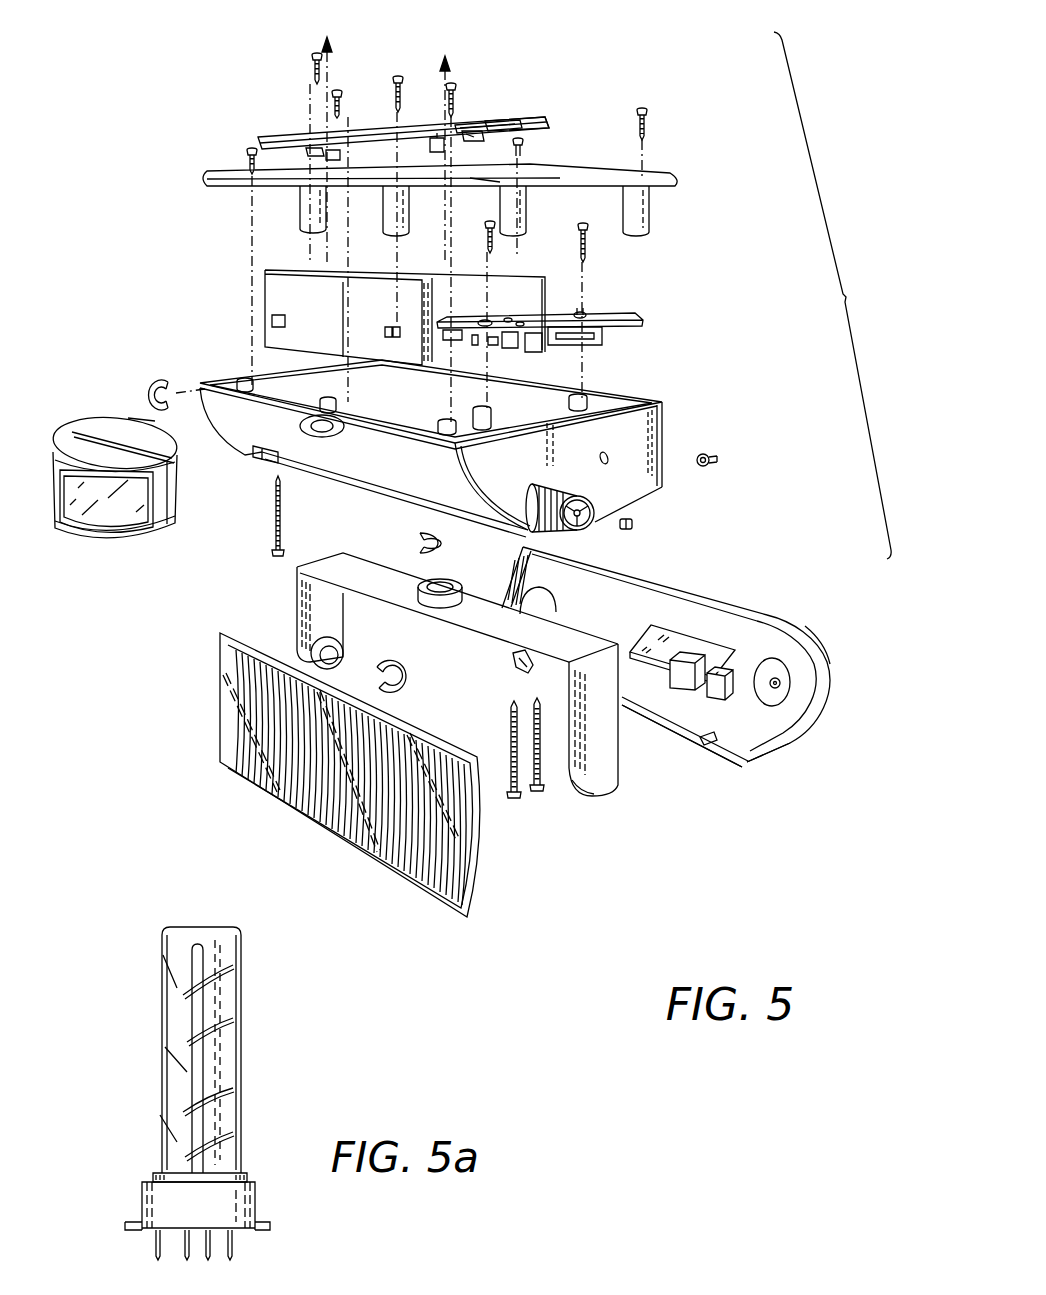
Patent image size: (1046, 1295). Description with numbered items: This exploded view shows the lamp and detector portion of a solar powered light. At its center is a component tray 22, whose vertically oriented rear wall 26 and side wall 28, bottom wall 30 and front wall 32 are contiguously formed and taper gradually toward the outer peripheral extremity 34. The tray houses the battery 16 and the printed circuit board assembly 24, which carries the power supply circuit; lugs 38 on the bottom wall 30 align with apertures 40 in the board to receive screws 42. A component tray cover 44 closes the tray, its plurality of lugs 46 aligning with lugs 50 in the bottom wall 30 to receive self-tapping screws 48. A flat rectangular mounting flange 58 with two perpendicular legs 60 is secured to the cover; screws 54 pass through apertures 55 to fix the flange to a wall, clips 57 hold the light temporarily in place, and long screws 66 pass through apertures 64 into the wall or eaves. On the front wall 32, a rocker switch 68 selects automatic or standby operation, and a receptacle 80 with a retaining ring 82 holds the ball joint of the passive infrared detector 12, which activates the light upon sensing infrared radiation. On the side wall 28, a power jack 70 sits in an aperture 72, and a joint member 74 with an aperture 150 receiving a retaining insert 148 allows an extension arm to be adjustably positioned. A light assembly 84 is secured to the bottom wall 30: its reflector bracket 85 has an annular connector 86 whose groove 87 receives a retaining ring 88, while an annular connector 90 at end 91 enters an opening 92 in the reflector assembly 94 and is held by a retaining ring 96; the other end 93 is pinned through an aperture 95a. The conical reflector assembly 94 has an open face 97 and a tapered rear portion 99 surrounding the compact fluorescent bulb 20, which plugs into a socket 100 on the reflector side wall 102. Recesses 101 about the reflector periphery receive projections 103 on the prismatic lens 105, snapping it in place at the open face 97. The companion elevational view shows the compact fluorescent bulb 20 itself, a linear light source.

In FIG. 5, the passive infrared detector 12 is at (104, 530).
In FIG. 5, the battery 16 is at (277, 294).
In FIG. 5, the compact fluorescent bulb 20 is at (660, 630).
In FIG. 5A, the compact fluorescent bulb 20 is at (143, 1034).
In FIG. 5, the component tray 22 is at (470, 449).
In FIG. 5, the printed circuit board assembly 24 is at (567, 326).
In FIG. 5, the rear wall 26 is at (614, 397).
In FIG. 5, the side wall 28 is at (658, 484).
In FIG. 5, the bottom wall 30 is at (650, 505).
In FIG. 5, the front wall 32 is at (372, 463).
In FIG. 5, the outer peripheral extremity 34 is at (242, 424).
In FIG. 5, the lugs 38 is at (585, 397).
In FIG. 5, the apertures 40 is at (585, 314).
In FIG. 5, the screws 42 is at (578, 250).
In FIG. 5, the component tray cover 44 is at (676, 181).
In FIG. 5, the lugs 46 is at (302, 206).
In FIG. 5, the self-tapping screws 48 is at (246, 152).
In FIG. 5, the lugs 50 is at (480, 180).
In FIG. 5, the screws 54 is at (437, 136).
In FIG. 5, the apertures 55 is at (333, 148).
In FIG. 5, the clips 57 is at (470, 132).
In FIG. 5, the mounting flange 58 is at (520, 121).
In FIG. 5, the legs 60 is at (558, 128).
In FIG. 5, the apertures 64 is at (478, 130).
In FIG. 5, the long screws 66 is at (272, 536).
In FIG. 5, the switch 68 is at (262, 464).
In FIG. 5, the power jack 70 is at (716, 460).
In FIG. 5, the aperture 72 is at (600, 457).
In FIG. 5, the joint member 74 is at (567, 507).
In FIG. 5, the receptacle 80 is at (323, 438).
In FIG. 5, the retaining ring 82 is at (152, 380).
In FIG. 5, the light assembly 84 is at (471, 703).
In FIG. 5, the reflector bracket 85 is at (607, 753).
In FIG. 5, the annular connector 86 is at (458, 595).
In FIG. 5, the groove 87 is at (404, 586).
In FIG. 5, the retaining ring 88 is at (406, 544).
In FIG. 5, the annular connector 90 is at (340, 642).
In FIG. 5, the end 91 is at (305, 614).
In FIG. 5, the opening 92 is at (557, 604).
In FIG. 5, the end 93 is at (600, 800).
In FIG. 5, the reflector assembly 94 is at (694, 679).
In FIG. 5, the aperture 95a is at (784, 687).
In FIG. 5, the retaining ring 96 is at (406, 681).
In FIG. 5, the open face 97 is at (733, 767).
In FIG. 5, the tapered rear portion 99 is at (822, 643).
In FIG. 5, the socket 100 is at (731, 728).
In FIG. 5, the recesses 101 is at (512, 660).
In FIG. 5, the side wall 102 is at (792, 682).
In FIG. 5, the projections 103 is at (352, 801).
In FIG. 5, the prismatic lens 105 is at (450, 888).
In FIG. 5, the retaining insert 148 is at (624, 517).
In FIG. 5, the aperture 150 is at (590, 522).